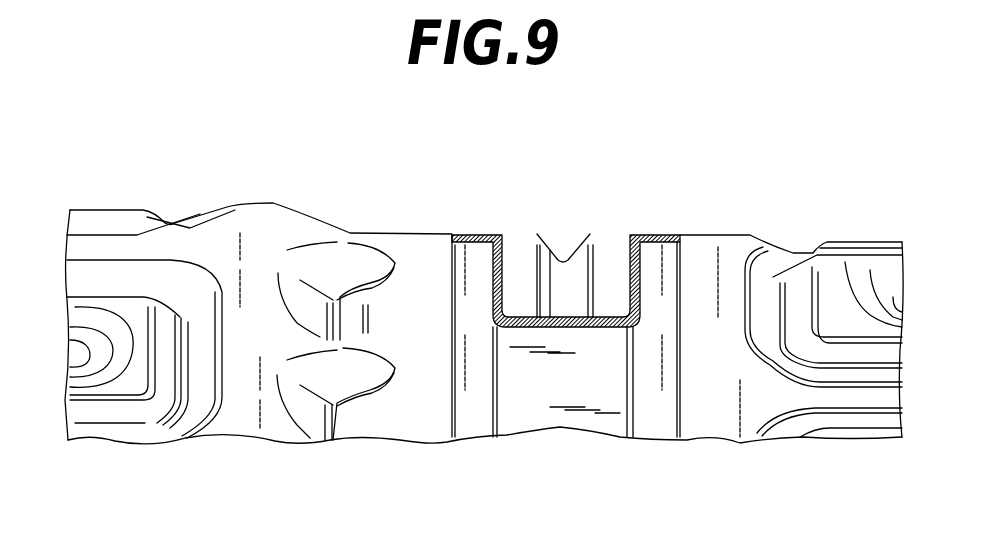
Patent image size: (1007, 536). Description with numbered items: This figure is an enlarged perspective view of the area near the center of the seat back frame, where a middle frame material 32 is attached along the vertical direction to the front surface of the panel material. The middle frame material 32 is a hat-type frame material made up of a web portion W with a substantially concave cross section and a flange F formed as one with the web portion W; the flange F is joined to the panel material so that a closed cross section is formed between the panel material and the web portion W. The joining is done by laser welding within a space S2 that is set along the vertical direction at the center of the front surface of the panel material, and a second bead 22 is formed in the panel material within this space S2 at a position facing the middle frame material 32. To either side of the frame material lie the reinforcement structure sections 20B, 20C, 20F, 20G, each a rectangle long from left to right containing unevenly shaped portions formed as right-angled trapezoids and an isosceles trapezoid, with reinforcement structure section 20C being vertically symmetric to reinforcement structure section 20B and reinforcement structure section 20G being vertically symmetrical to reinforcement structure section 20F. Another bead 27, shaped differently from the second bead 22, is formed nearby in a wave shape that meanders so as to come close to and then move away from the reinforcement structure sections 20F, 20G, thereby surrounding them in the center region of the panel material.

The reinforcement structure section 20B is at (146, 371).
The reinforcement structure section 20C is at (118, 417).
The reinforcement structure section 20F is at (845, 307).
The reinforcement structure section 20G is at (838, 263).
The second bead 22 is at (563, 265).
The another bead 27 is at (322, 428).
The middle frame material 32 is at (585, 422).
The flange F is at (467, 430).
The web portion W is at (538, 422).
The space S2 is at (685, 269).